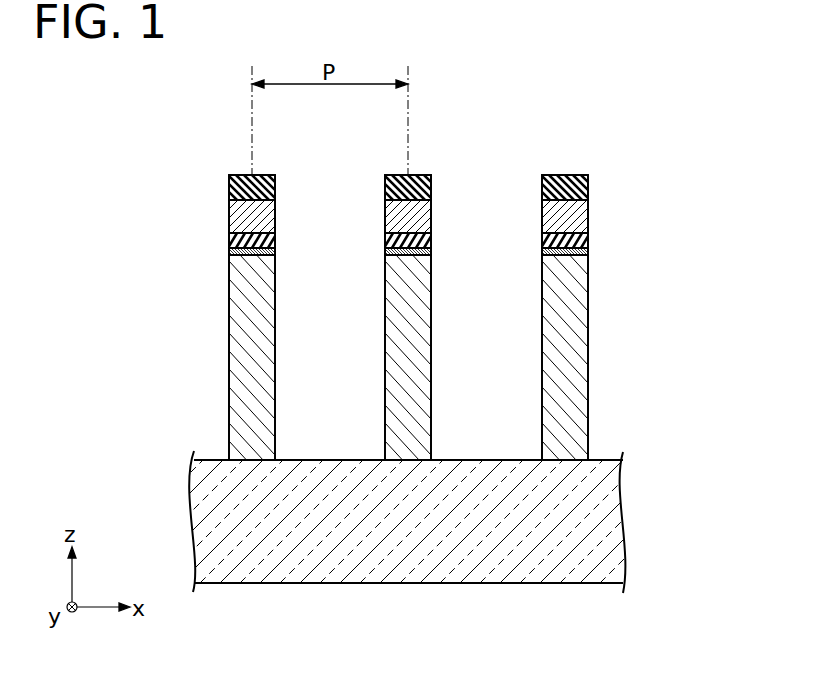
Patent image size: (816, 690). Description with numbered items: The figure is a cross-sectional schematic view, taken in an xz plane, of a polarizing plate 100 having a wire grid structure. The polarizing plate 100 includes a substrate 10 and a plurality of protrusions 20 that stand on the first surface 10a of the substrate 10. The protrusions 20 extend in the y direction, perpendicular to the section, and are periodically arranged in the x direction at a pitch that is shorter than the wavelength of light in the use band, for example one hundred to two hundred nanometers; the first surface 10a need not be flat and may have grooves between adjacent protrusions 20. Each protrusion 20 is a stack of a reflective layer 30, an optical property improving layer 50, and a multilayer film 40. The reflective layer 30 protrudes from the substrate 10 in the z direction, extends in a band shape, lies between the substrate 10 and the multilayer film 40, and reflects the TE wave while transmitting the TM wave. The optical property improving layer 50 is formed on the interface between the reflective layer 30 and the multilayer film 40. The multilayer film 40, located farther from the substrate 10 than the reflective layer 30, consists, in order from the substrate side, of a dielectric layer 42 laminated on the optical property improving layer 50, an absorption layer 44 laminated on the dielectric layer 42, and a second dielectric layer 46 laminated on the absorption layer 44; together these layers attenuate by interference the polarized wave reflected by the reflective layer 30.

The polarizing plate 100 is at (647, 127).
The substrate 10 is at (593, 522).
The first surface 10a is at (566, 460).
The protrusions 20 is at (410, 302).
The reflective layer 30 is at (423, 430).
The multilayer film 40 is at (405, 203).
The dielectric layer 42 is at (401, 234).
The absorption layer 44 is at (430, 218).
The second dielectric layer 46 is at (430, 187).
The optical property improving layer 50 is at (430, 253).